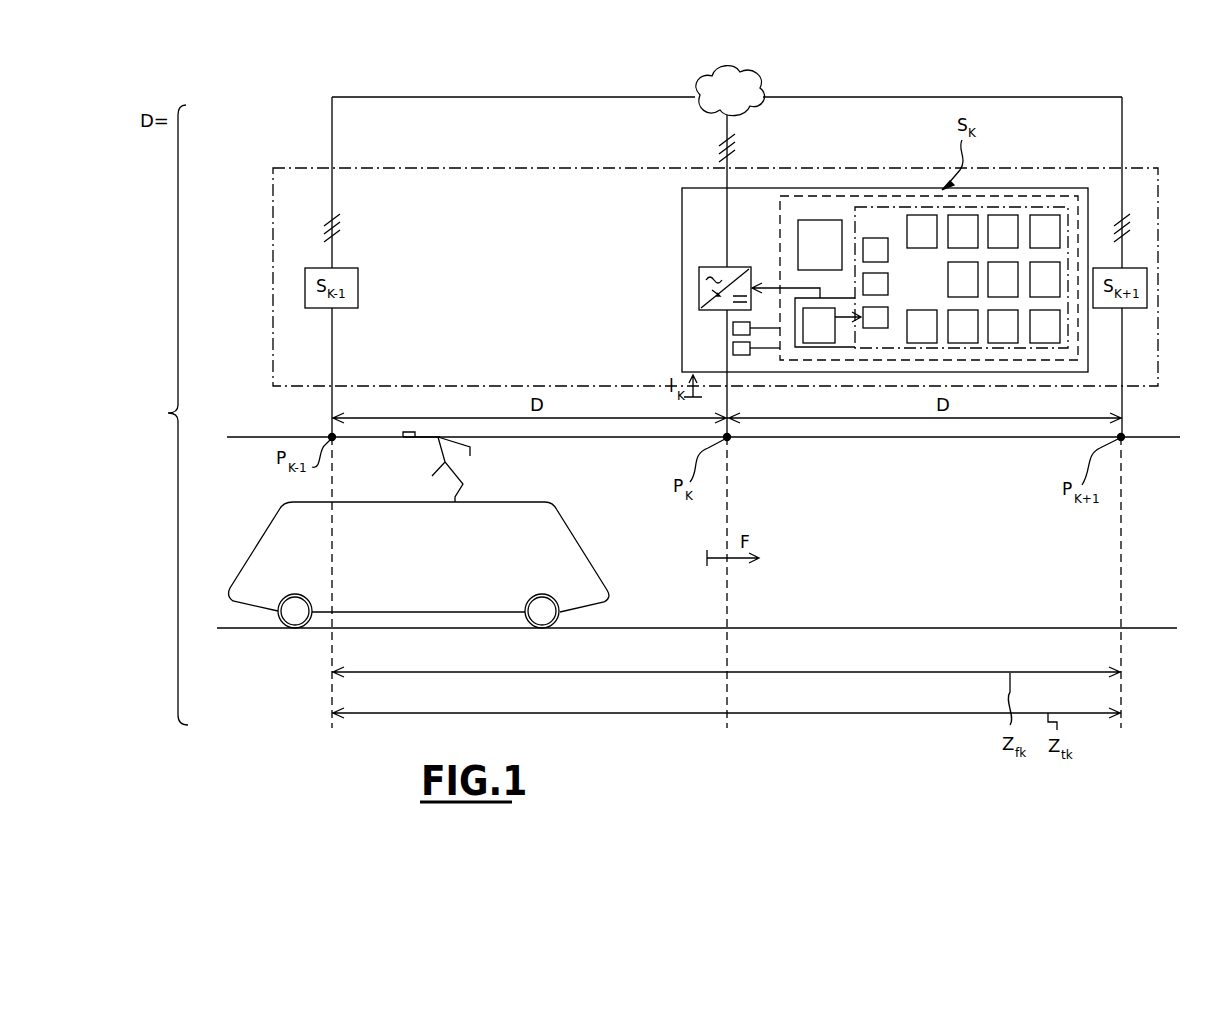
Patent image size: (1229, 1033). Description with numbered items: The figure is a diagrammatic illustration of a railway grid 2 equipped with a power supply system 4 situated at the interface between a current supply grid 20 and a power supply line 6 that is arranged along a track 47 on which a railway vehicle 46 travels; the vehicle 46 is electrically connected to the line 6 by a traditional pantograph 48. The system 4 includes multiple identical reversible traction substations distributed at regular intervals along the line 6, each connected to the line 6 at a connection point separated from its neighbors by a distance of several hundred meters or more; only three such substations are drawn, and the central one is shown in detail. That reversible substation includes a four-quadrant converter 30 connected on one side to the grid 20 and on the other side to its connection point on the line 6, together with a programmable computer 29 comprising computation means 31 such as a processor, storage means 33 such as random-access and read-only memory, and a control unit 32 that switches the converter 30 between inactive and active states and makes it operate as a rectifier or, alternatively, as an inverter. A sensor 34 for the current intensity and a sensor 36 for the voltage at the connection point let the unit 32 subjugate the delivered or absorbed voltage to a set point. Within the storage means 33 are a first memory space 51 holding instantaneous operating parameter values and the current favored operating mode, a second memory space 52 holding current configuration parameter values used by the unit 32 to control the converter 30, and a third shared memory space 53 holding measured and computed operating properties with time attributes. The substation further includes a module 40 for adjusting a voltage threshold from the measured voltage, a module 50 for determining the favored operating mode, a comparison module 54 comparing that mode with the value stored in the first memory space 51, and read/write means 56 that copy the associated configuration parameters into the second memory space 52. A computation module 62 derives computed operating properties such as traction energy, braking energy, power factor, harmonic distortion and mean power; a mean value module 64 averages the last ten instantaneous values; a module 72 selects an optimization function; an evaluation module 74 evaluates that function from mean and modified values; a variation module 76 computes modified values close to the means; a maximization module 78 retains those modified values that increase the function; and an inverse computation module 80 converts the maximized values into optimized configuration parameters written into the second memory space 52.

The railway grid 2 is at (166, 415).
The power supply system 4 is at (301, 164).
The power supply line 6 is at (1160, 437).
The current supply grid 20 is at (740, 103).
The programmable computer 29 is at (999, 190).
The four-quadrant converter 30 is at (699, 284).
The computation means 31 is at (831, 255).
The control unit 32 is at (825, 322).
The storage means 33 is at (1045, 207).
The current sensor 34 is at (733, 331).
The voltage sensor 36 is at (733, 344).
The threshold adjusting module 40 is at (922, 231).
The railway vehicle 46 is at (248, 548).
The track 47 is at (1060, 622).
The pantograph 48 is at (432, 476).
The favored operating mode determining module 50 is at (922, 326).
The first memory space 51 is at (872, 247).
The second memory space 52 is at (875, 320).
The third memory space 53 is at (879, 288).
The comparison module 54 is at (963, 231).
The read/write means 56 is at (963, 279).
The computation module 62 is at (963, 326).
The mean value module 64 is at (1003, 231).
The optimization function selection module 72 is at (1003, 279).
The evaluation module 74 is at (1003, 326).
The variation module 76 is at (1045, 231).
The maximization module 78 is at (1045, 279).
The inverse computation module 80 is at (1045, 326).